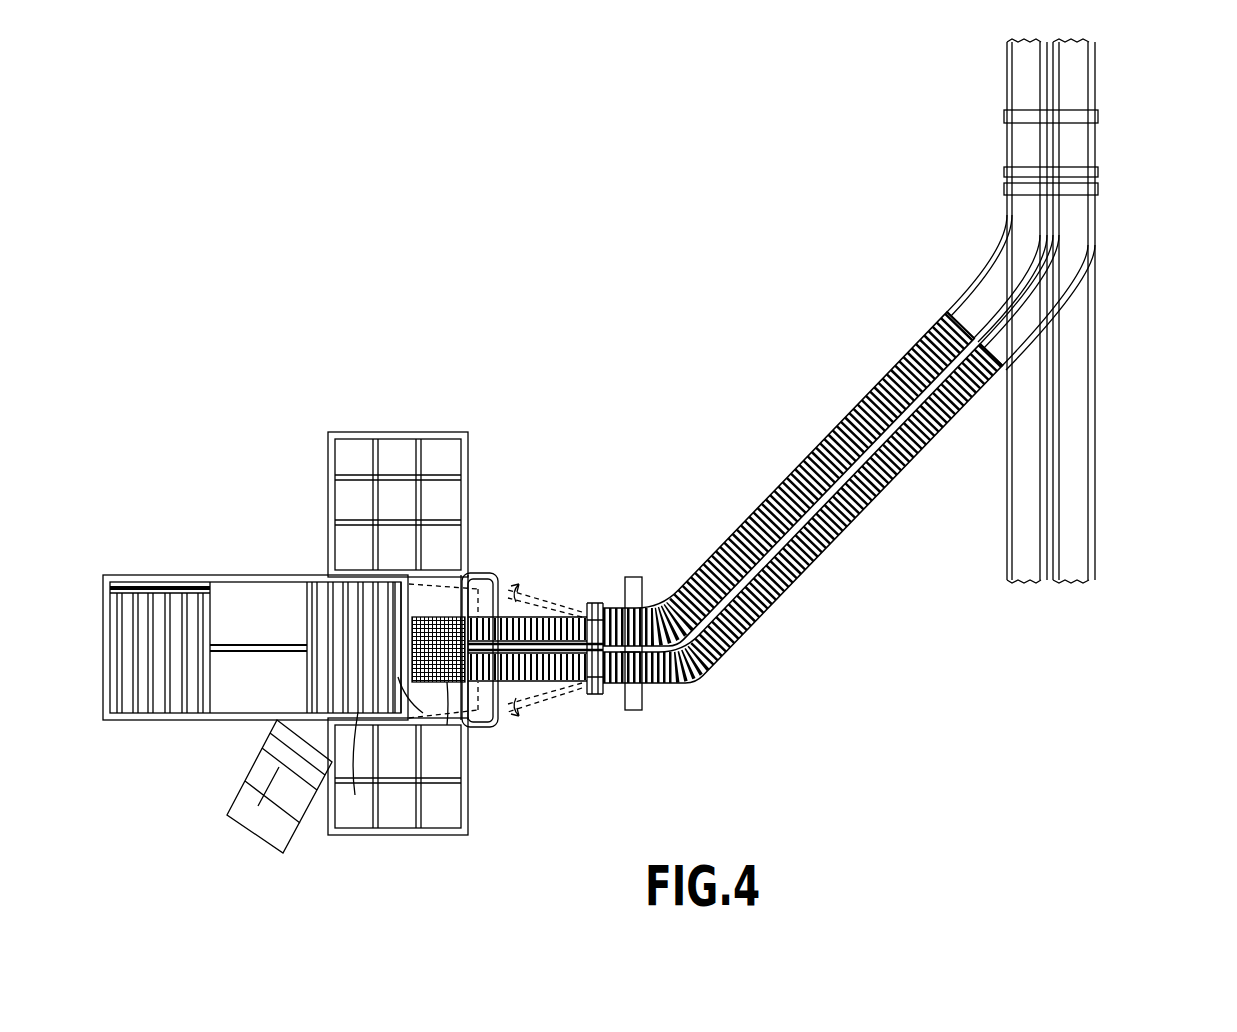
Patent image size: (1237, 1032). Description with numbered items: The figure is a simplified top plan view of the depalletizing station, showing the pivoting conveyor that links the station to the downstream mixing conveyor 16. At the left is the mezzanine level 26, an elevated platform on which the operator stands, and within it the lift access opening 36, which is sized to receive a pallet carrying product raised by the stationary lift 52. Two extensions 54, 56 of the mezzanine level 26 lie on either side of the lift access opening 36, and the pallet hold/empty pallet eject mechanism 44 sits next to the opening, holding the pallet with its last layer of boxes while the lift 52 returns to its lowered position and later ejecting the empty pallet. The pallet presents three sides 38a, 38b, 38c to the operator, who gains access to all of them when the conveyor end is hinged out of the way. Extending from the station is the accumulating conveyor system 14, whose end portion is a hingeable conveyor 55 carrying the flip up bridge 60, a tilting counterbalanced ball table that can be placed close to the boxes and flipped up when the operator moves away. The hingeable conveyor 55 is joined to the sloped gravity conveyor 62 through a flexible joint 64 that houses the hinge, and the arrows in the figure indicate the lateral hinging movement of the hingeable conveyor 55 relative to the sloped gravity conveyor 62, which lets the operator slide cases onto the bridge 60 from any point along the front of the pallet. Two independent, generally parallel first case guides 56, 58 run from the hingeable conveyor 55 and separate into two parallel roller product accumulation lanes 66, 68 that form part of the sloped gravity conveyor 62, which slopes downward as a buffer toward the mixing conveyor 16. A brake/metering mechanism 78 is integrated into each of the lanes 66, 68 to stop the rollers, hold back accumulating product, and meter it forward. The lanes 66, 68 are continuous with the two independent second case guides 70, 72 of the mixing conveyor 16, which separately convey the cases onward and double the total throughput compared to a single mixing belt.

The accumulating conveyor system 14 is at (715, 400).
The mixing conveyor 16 is at (1132, 143).
The mezzanine level 26 is at (487, 540).
The lift access opening 36 is at (454, 606).
The side of the pallet 38a is at (330, 595).
The side of the pallet 38b is at (423, 657).
The side of the pallet 38c is at (354, 766).
The pallet hold/empty pallet eject mechanism 44 is at (250, 575).
The stationary lift 52 is at (265, 760).
The extension 54 is at (405, 432).
The hingeable conveyor 55 is at (563, 602).
The extension / first case guide 56 is at (410, 835).
The first case guide 58 is at (768, 643).
The flip up bridge 60 is at (455, 692).
The sloped gravity conveyor 62 is at (873, 622).
The flexible joint 64 is at (628, 600).
The product accumulation lane 66 is at (845, 420).
The product accumulation lane 68 is at (848, 530).
The second case guide 70 is at (1020, 70).
The second case guide 72 is at (1075, 70).
The brake/metering mechanism 78 is at (945, 320).